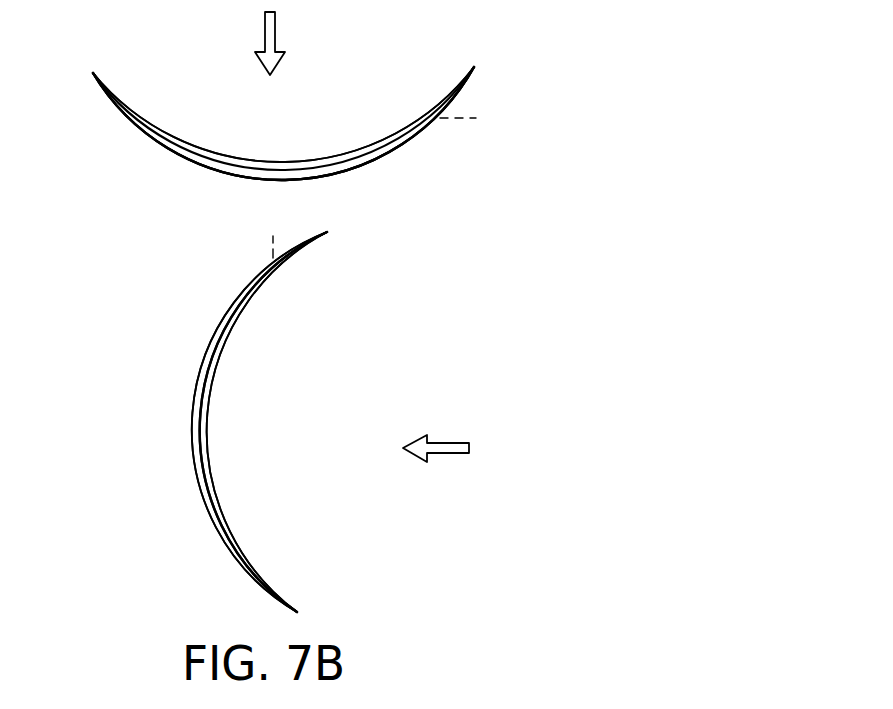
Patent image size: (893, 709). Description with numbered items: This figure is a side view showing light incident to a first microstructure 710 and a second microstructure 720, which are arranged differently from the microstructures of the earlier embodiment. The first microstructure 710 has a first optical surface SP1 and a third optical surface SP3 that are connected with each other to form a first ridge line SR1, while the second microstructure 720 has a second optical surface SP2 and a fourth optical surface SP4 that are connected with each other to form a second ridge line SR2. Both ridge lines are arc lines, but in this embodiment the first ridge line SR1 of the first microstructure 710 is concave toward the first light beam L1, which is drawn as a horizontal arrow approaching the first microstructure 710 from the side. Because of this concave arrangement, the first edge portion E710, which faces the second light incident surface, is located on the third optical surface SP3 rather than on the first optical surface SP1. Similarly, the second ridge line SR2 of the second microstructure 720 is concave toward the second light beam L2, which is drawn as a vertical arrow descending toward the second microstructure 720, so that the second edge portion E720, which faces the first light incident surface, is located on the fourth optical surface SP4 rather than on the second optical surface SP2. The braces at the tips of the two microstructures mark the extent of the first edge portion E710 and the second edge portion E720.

The first microstructure 710 is at (192, 450).
The second microstructure 720 is at (423, 128).
The first ridge line SR1 is at (198, 387).
The second ridge line SR2 is at (408, 140).
The first optical surface SP1 is at (209, 410).
The second optical surface SP2 is at (377, 147).
The third optical surface SP3 is at (227, 316).
The fourth optical surface SP4 is at (388, 156).
The first edge portion E710 is at (327, 232).
The second edge portion E720 is at (473, 65).
The first light beam L1 is at (445, 443).
The second light beam L2 is at (275, 30).